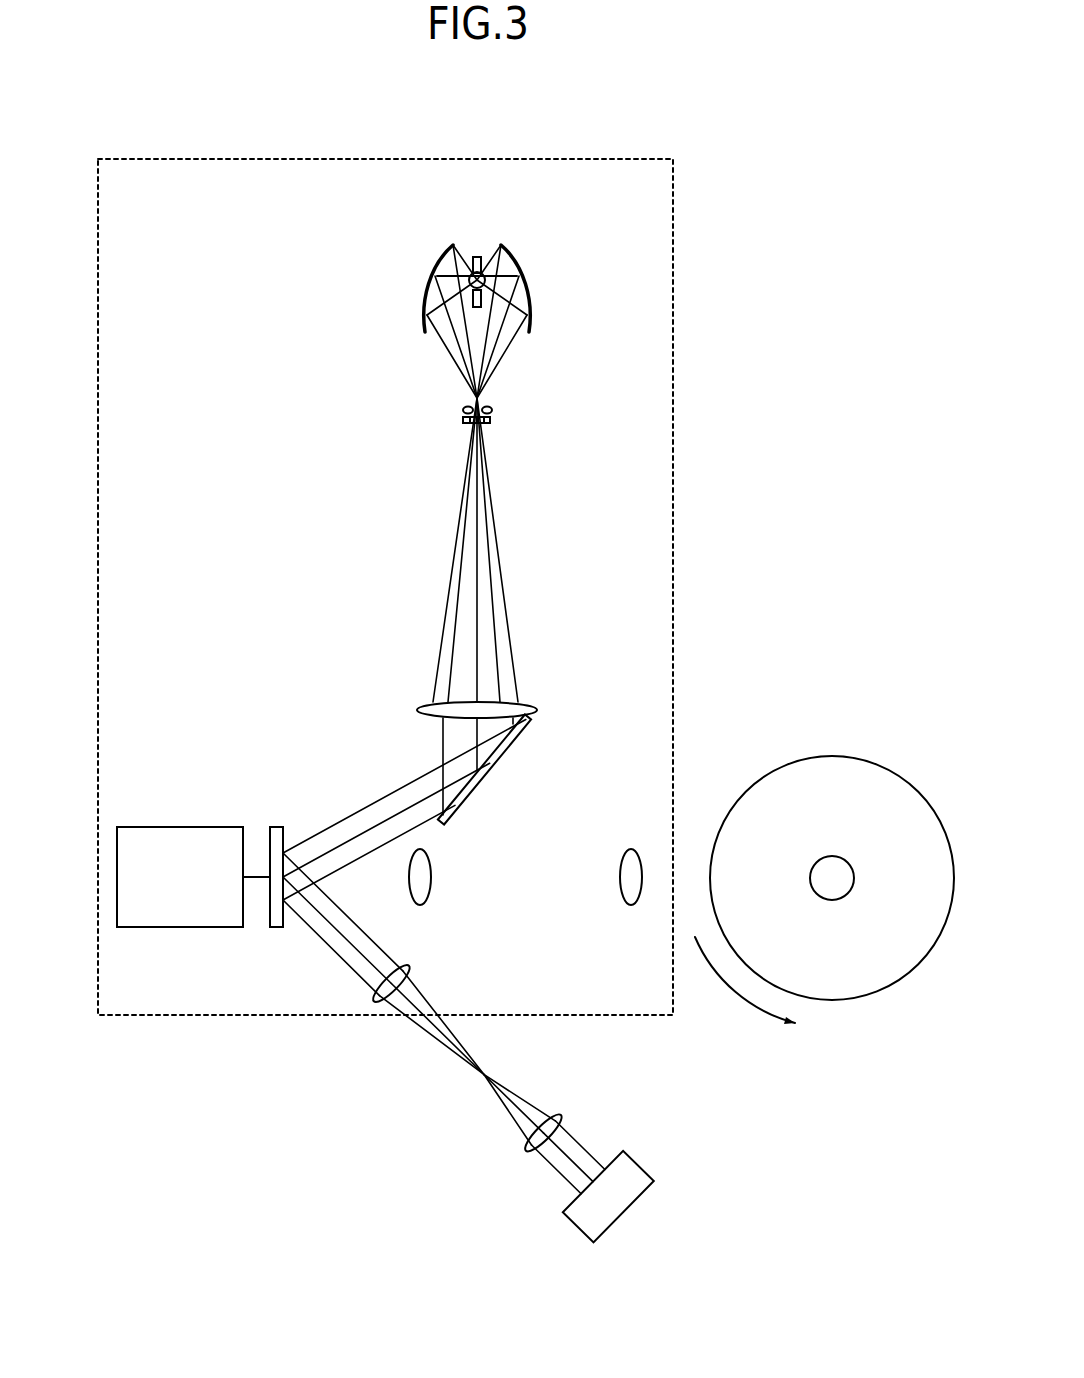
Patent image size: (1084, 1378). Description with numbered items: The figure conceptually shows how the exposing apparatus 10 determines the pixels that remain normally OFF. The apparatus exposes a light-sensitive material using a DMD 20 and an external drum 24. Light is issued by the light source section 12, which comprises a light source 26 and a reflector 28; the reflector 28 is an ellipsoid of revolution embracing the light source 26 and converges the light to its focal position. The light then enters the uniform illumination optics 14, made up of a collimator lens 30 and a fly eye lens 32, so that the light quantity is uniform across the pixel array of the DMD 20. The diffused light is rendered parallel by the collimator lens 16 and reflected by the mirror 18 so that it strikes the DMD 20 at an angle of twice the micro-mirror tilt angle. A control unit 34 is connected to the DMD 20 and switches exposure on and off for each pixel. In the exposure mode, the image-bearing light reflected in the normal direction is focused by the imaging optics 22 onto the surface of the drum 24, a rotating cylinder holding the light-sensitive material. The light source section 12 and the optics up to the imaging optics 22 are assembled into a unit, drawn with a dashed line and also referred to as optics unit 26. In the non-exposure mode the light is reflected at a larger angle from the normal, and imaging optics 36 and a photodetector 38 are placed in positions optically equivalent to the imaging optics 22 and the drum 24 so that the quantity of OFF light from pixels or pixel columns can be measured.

The image exposing apparatus 10 is at (763, 408).
The light source section 12 is at (519, 313).
The uniform illumination optics 14 is at (475, 445).
The collimator lens 16 is at (538, 699).
The reflector mirror 18 is at (493, 775).
The DMD 20 is at (282, 827).
The imaging optics 22 is at (550, 977).
The external drum 24 is at (862, 965).
The light source 26 is at (470, 257).
The reflector 28 is at (533, 322).
The collimator lens 30 is at (466, 409).
The fly eye lens 32 is at (490, 420).
The control unit 34 is at (195, 827).
The imaging optics 36 is at (453, 1105).
The photodetector 38 is at (608, 1207).